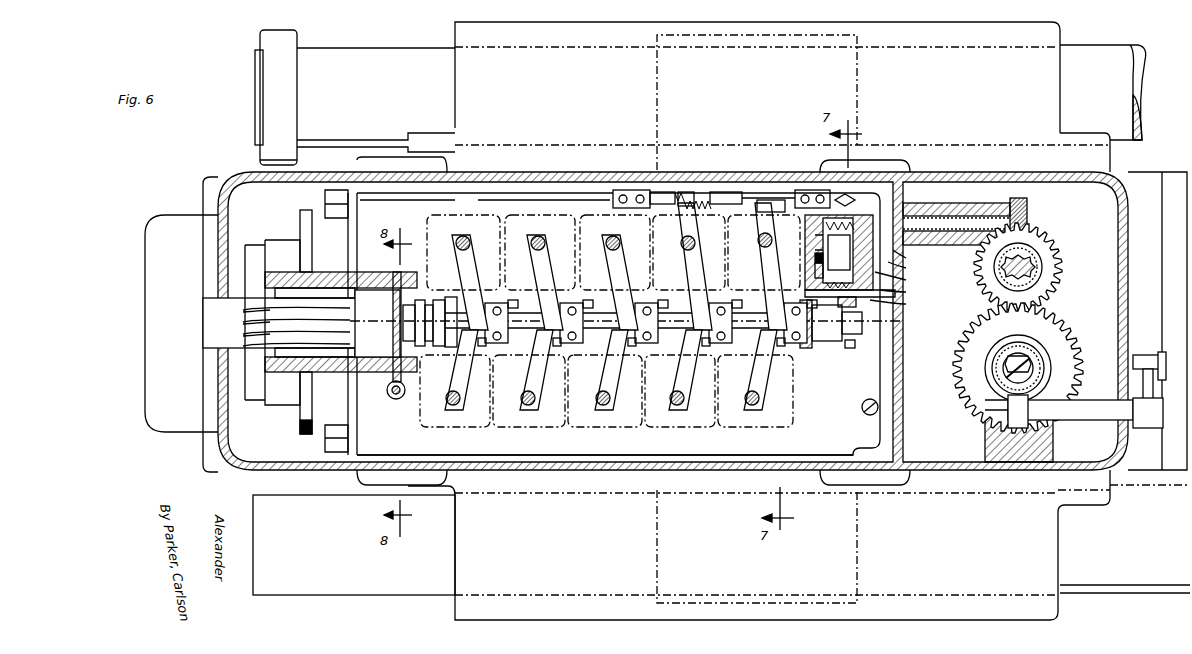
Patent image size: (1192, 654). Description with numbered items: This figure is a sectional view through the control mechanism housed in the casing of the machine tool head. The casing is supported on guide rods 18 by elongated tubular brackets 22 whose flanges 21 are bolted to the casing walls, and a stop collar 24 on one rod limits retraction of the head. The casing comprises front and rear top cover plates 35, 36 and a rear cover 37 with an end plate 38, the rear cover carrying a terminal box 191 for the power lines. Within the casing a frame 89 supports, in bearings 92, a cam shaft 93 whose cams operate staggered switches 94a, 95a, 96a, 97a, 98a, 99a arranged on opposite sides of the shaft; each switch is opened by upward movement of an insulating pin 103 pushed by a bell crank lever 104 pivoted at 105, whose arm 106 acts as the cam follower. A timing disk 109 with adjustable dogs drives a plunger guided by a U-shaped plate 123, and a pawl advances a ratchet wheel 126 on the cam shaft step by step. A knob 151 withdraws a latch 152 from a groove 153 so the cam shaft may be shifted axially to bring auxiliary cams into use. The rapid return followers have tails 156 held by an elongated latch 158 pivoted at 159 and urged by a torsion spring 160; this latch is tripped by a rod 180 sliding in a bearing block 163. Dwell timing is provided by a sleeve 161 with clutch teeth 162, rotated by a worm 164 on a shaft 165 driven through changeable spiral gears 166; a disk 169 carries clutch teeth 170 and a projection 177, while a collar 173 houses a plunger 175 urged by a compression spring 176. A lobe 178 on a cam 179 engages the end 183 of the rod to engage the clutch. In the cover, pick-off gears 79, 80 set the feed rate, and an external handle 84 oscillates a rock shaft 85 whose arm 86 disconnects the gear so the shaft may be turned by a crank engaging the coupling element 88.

The rods 18 is at (1137, 80).
The flanges 21 is at (1100, 133).
The tubular brackets 22 is at (1062, 40).
The stop collar 24 is at (292, 45).
The front top cover plate 35 is at (935, 472).
The rear top cover plate 36 is at (615, 470).
The rear cover 37 is at (232, 178).
The end plate 38 is at (205, 452).
The pick-off gear 79 is at (1050, 280).
The pick-off gear 80 is at (1072, 352).
The external handle 84 is at (1160, 352).
The rock shaft 85 is at (1085, 410).
The arm 86 is at (996, 408).
The coupling element 88 is at (1003, 370).
The frame 89 is at (715, 458).
The bearings 92 is at (397, 272).
The cam shaft 93 is at (450, 297).
The switch 94a is at (726, 252).
The switch 95a is at (738, 440).
The switch 96a is at (583, 215).
The switch 97a is at (583, 440).
The switch 98a is at (465, 215).
The switch 99a is at (462, 428).
The insulating pin 103 is at (470, 243).
The bell crank lever 104 is at (470, 262).
The pivot 105 is at (585, 303).
The arm 106 is at (516, 292).
The disk 109 is at (297, 232).
The U-shaped plate 123 is at (280, 272).
The ratchet wheel 126 is at (320, 338).
The knob 151 is at (400, 396).
The latch 152 is at (398, 322).
The groove 153 is at (418, 346).
The tails 156 is at (703, 213).
The elongated latch 158 is at (655, 205).
The pivot 159 is at (770, 200).
The torsion spring 160 is at (690, 193).
The sleeve 161 is at (839, 252).
The clutch teeth 162 is at (909, 266).
The bearing block 163 is at (912, 255).
The worm 164 is at (842, 252).
The shaft 165 is at (948, 218).
The spiral gears 166 is at (1030, 243).
The disk 169 is at (905, 291).
The clutch teeth 170 is at (903, 278).
The collar 173 is at (804, 248).
The plunger 175 is at (804, 273).
The compression spring 176 is at (804, 263).
The projection 177 is at (840, 289).
The lobe 178 is at (852, 330).
The cam 179 is at (862, 357).
The rod 180 is at (822, 203).
The end 183 is at (900, 303).
The terminal box 191 is at (178, 210).